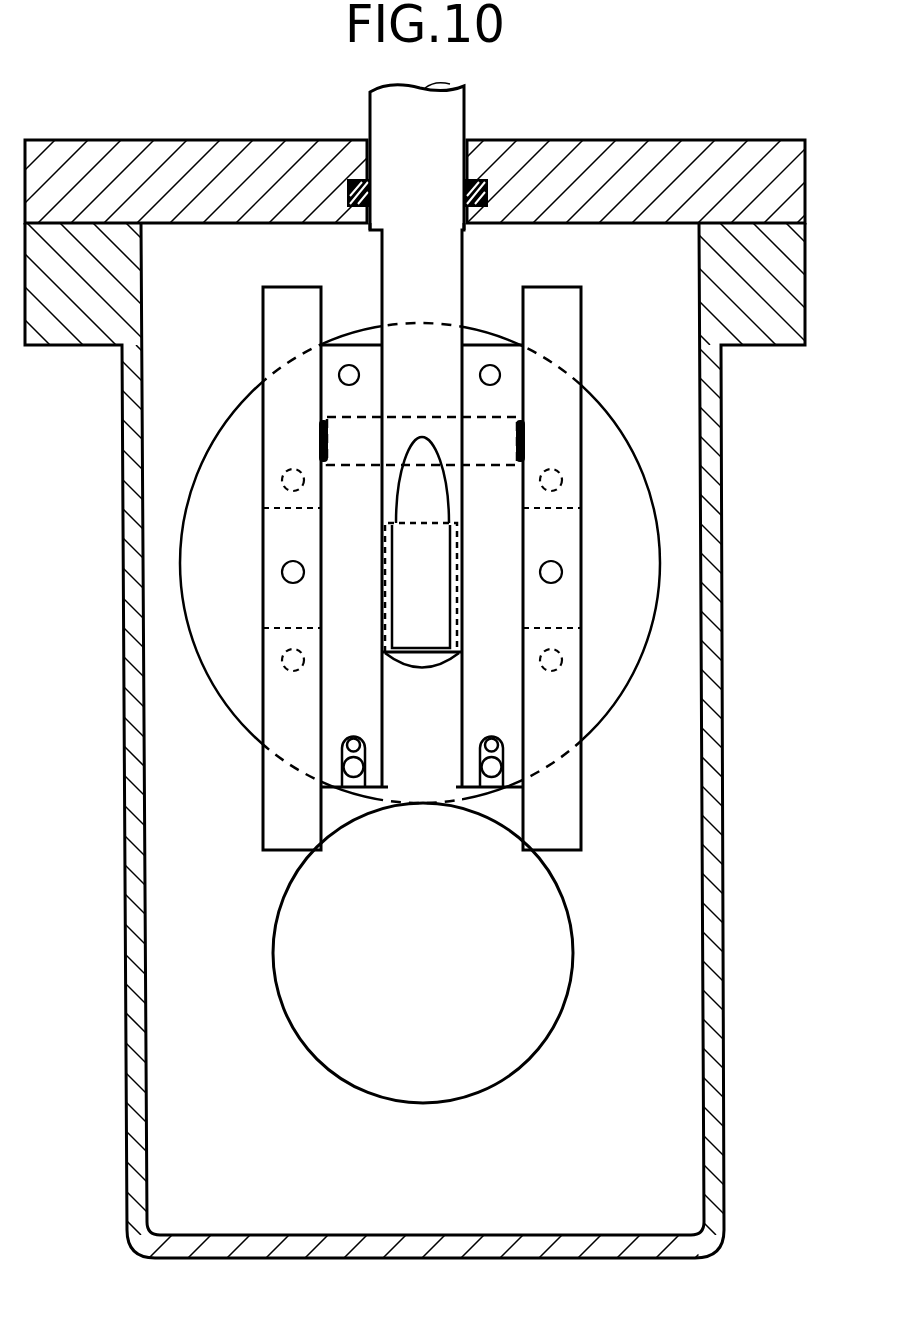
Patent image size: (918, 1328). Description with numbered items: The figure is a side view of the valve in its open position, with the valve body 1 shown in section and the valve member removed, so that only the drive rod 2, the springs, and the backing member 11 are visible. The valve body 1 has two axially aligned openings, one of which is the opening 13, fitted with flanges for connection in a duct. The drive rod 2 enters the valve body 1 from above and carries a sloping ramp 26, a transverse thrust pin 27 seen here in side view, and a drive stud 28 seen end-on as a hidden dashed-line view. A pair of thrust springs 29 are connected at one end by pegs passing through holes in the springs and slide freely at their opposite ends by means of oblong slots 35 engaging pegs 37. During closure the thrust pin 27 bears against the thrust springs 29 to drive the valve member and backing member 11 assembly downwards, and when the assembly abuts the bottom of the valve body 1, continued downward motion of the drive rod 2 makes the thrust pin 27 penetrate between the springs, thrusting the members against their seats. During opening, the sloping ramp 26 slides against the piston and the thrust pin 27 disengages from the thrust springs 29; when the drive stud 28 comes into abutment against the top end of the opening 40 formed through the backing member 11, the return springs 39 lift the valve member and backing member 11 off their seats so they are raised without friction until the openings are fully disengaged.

The valve body 1 is at (713, 658).
The drive rod 2 is at (422, 118).
The backing member 11 is at (613, 705).
The opening 13 is at (573, 987).
The sloping ramp 26 is at (427, 485).
The transverse thrust pin 27 is at (485, 415).
The drive stud 28 is at (423, 530).
The thrust springs 29 is at (492, 542).
The oblong slot 35 is at (357, 738).
The peg 37 is at (358, 780).
The return springs 39 is at (288, 800).
The opening 40 is at (422, 719).